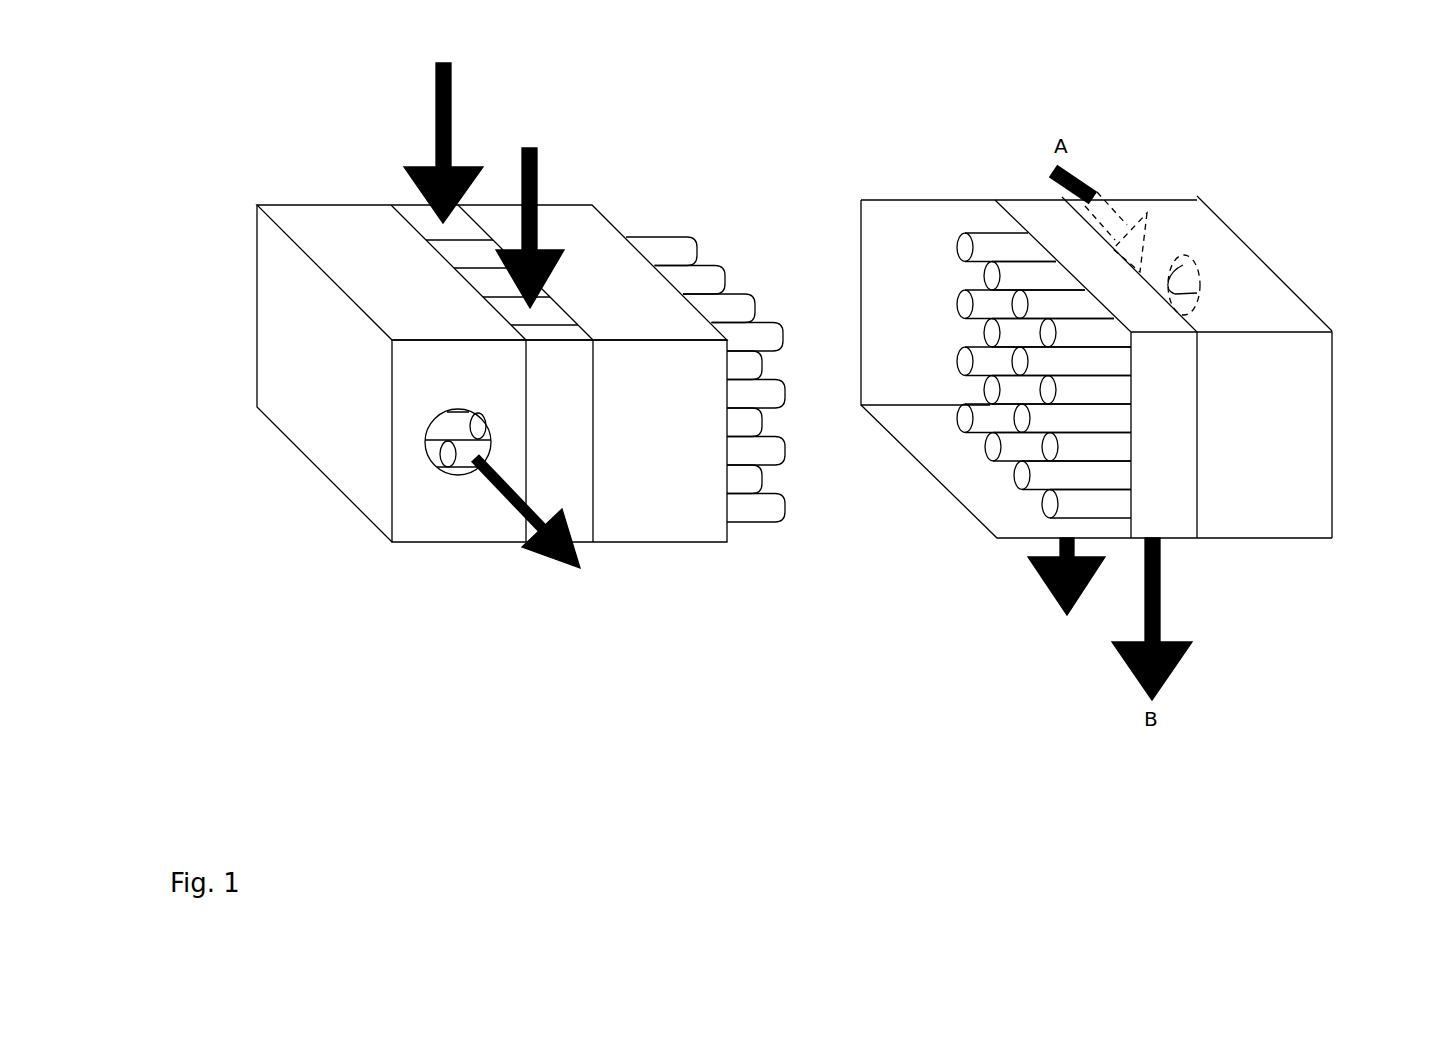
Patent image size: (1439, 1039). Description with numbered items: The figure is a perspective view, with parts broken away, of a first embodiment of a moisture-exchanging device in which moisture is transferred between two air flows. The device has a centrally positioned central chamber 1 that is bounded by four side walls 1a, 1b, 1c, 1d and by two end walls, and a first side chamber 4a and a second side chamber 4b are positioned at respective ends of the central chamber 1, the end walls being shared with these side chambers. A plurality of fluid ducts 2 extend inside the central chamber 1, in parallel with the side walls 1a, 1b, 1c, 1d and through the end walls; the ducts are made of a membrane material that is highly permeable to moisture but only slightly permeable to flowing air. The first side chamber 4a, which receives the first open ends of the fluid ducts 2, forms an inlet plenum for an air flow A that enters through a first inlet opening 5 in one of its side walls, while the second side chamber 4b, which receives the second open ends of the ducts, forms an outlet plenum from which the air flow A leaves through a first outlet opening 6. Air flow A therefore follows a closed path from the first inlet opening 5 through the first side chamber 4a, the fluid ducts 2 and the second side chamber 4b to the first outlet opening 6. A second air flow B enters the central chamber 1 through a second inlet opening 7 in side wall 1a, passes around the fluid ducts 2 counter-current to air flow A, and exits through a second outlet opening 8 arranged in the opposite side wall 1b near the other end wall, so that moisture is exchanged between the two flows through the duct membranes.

The central chamber 1 is at (697, 542).
The side wall 1a is at (580, 235).
The side wall 1b is at (1020, 518).
The side wall 1c is at (630, 495).
The side wall 1d is at (907, 257).
The fluid ducts 2 is at (748, 523).
The first side chamber 4a is at (1331, 454).
The second side chamber 4b is at (257, 332).
The first inlet opening 5 is at (1183, 265).
The first outlet opening 6 is at (443, 470).
The second inlet opening 7 is at (417, 205).
The second outlet opening 8 is at (1253, 540).